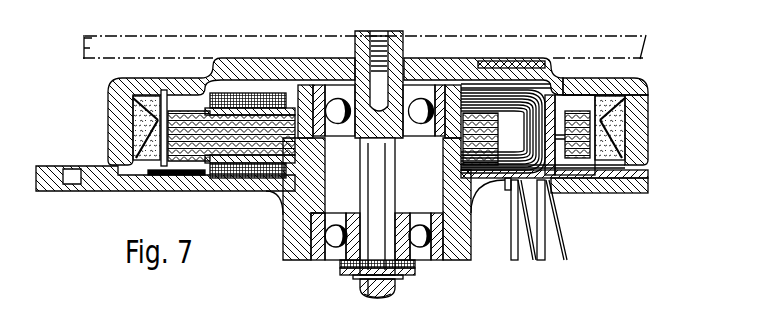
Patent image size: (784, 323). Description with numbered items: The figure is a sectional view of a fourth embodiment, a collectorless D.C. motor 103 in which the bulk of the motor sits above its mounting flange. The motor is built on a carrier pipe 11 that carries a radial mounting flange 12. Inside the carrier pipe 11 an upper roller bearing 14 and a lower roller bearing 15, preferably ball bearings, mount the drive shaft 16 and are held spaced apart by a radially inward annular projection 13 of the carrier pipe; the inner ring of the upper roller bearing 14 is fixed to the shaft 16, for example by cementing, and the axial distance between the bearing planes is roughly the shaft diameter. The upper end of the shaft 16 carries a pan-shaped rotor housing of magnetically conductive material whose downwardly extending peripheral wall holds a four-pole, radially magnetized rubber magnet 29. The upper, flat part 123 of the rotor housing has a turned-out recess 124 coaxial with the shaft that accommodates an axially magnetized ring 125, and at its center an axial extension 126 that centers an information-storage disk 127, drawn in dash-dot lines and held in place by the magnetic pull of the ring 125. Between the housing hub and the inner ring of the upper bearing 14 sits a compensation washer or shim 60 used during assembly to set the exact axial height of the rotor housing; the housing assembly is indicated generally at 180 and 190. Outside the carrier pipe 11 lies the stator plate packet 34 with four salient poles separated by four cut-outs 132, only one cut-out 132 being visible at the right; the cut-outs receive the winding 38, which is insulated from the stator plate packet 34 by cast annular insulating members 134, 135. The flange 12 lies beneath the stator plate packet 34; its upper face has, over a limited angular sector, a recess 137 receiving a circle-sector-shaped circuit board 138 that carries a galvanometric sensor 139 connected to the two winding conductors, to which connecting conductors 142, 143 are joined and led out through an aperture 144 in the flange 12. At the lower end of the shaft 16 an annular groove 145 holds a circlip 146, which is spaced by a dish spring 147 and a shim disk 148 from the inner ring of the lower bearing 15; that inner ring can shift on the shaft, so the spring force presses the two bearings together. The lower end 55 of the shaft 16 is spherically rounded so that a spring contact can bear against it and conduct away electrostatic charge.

The information-storage disk 127 is at (70, 38).
The collectorless D.C. motor 103 is at (84, 104).
The cast annular insulating member 134 is at (187, 97).
The winding 38 is at (480, 92).
The compensation washer or shim 60 is at (345, 68).
The axial extension 126 is at (397, 28).
The turned-out recess 124 is at (492, 52).
The axially magnetized ring 125 is at (521, 58).
The cut-out 132 is at (551, 100).
The upper flat part of rotor housing 123 is at (596, 77).
The housing 180 is at (649, 64).
The rubber magnet 29 is at (618, 106).
The housing side wall 190 is at (638, 129).
The mounting flange 12 is at (83, 178).
The cast annular insulating member 135 is at (179, 176).
The stator plate packet 34 is at (234, 176).
The radially inward annular projection 13 is at (317, 193).
The carrier pipe 11 is at (308, 158).
The lower roller bearing 15 is at (405, 144).
The upper roller bearing 14 is at (414, 204).
The aperture 144 is at (500, 174).
The shim disk 148 is at (328, 256).
The dish spring 147 is at (330, 260).
The circlip 146 is at (330, 266).
The annular groove 145 is at (361, 284).
The drive shaft 16 is at (385, 275).
The lower end of shaft 55 is at (377, 289).
The connecting conductor 142 is at (517, 255).
The connecting conductor 143 is at (533, 257).
The circuit board 138 is at (568, 185).
The galvanometric sensor 139 is at (588, 172).
The recess 137 is at (613, 180).